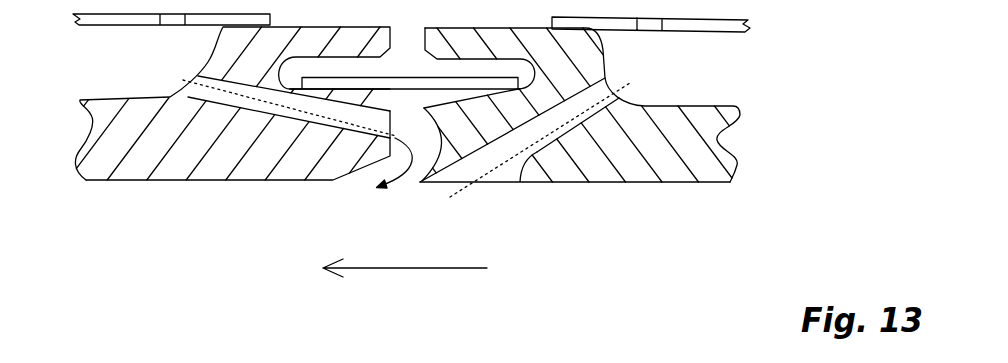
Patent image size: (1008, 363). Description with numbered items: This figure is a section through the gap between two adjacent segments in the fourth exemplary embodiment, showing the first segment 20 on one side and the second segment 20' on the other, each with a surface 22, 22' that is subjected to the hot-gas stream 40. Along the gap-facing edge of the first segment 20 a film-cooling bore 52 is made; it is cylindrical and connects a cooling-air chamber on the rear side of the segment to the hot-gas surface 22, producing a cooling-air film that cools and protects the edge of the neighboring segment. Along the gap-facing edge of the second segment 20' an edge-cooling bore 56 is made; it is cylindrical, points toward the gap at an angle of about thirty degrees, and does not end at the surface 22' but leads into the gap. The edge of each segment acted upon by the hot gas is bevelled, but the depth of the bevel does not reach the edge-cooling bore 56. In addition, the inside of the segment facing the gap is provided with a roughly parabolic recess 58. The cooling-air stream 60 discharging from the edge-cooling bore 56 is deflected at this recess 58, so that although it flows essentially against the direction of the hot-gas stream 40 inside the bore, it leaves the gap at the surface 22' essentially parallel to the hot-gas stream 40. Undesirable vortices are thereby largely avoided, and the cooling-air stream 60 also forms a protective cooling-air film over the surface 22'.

The second segment 20' is at (226, 103).
The first segment 20 is at (582, 105).
The surface subjected to the hot-gas stream 22' is at (230, 180).
The surface subjected to the hot-gas stream 22 is at (575, 189).
The edge-cooling bores 56 is at (272, 116).
The film-cooling bores 52 is at (536, 152).
The recess 58 is at (436, 143).
The cooling-air stream 60 is at (379, 174).
The hot-gas stream 40 is at (401, 285).